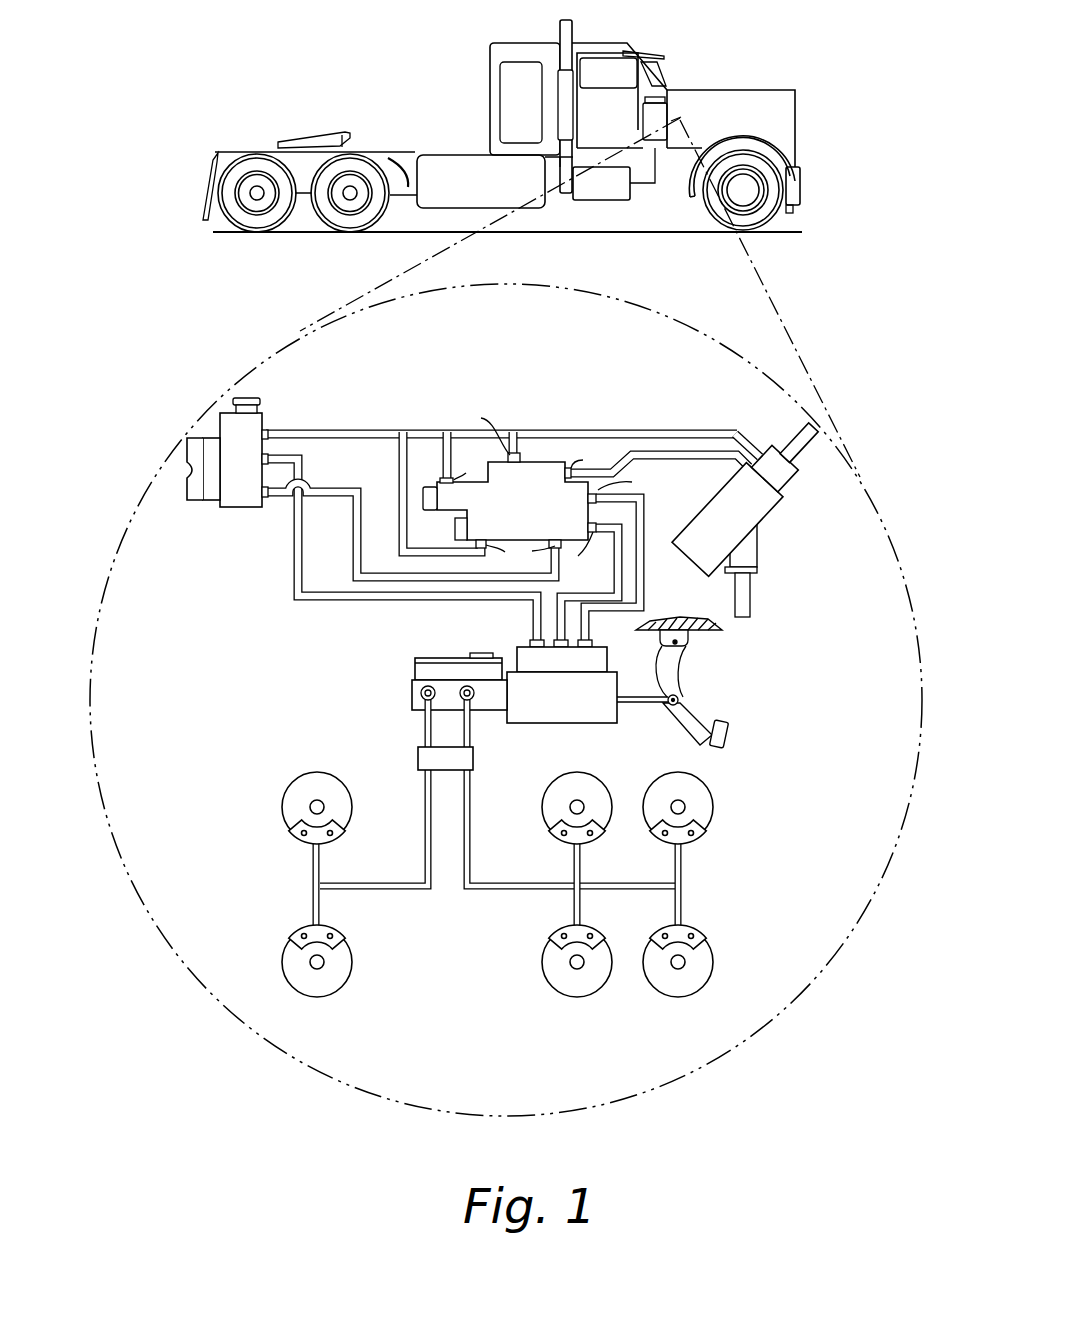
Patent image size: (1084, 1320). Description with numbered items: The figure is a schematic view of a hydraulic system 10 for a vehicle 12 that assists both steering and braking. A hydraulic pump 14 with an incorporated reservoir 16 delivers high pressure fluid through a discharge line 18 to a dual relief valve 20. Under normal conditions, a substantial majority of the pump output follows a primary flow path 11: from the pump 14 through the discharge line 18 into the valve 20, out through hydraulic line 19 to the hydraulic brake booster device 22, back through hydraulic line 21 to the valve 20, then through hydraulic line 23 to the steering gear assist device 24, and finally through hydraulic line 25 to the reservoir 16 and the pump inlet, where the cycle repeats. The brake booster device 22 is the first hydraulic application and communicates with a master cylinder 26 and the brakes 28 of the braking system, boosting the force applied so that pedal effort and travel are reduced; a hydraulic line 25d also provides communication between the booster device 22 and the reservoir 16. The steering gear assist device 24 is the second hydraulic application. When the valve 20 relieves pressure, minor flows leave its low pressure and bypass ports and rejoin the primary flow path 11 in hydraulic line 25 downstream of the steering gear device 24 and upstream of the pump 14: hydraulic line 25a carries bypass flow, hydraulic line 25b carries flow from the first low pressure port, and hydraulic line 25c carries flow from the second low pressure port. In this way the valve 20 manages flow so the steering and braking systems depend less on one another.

The hydraulic system 10 is at (885, 432).
The primary flow path 11 is at (353, 545).
The vehicle 12 is at (750, 88).
The hydraulic pump 14 is at (212, 507).
The reservoir 16 is at (262, 412).
The discharge line 18 is at (283, 503).
The hydraulic line 19 is at (624, 572).
The dual relief valve 20 is at (533, 468).
The hydraulic line 21 is at (645, 540).
The hydraulic brake booster device 22 is at (606, 645).
The hydraulic line 23 is at (660, 448).
The steering gear assist device 24 is at (773, 510).
The hydraulic line 25 is at (628, 430).
The hydraulic line 25a is at (505, 442).
The hydraulic line 25b is at (398, 468).
The hydraulic line 25c is at (443, 462).
The hydraulic line 25d is at (290, 572).
The master cylinder 26 is at (410, 693).
The brakes 28 is at (262, 884).